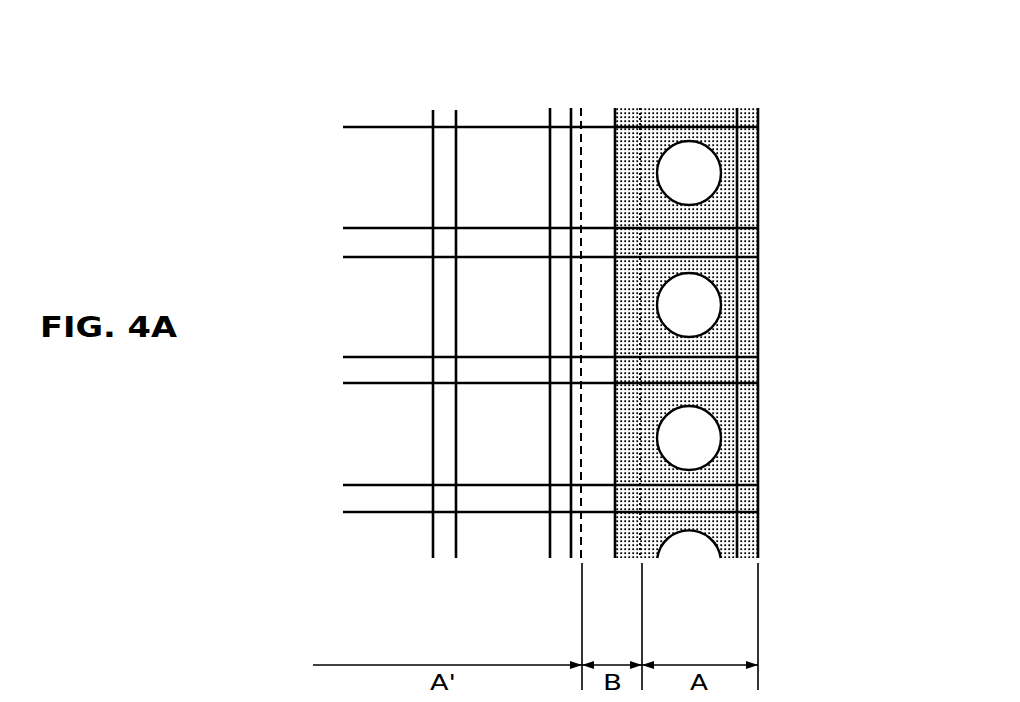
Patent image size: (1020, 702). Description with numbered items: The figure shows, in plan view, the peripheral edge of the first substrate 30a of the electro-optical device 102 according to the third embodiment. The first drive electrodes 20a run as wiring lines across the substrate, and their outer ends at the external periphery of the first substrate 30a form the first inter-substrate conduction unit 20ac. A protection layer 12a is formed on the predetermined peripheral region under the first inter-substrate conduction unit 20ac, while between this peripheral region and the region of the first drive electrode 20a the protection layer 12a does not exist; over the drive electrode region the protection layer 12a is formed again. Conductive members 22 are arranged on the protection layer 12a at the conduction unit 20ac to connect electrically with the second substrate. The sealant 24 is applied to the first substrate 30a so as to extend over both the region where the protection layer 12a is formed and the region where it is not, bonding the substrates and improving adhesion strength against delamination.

The electro-optical device 102 is at (306, 100).
The protection layer 12a is at (580, 84).
The first drive electrode 20a is at (552, 565).
The first inter-substrate conduction unit 20ac is at (727, 573).
The conductive member 22 is at (689, 438).
The sealant 24 is at (730, 143).
The first substrate 30a is at (758, 530).